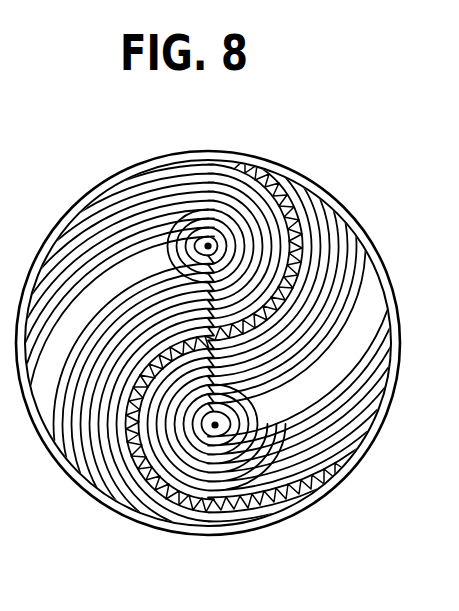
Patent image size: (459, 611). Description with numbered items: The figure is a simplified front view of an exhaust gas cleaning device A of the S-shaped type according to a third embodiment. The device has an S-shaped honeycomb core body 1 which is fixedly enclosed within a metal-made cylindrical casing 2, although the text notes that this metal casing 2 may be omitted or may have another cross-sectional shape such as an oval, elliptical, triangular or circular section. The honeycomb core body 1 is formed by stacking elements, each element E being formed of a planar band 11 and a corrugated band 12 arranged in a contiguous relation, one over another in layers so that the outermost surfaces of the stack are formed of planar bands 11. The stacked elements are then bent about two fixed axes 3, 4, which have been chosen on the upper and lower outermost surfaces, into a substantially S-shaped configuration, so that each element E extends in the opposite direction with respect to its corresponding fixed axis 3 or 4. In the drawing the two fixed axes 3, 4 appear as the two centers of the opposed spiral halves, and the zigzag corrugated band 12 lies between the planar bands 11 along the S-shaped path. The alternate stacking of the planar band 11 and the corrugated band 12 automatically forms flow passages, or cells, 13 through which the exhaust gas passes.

The spiral wound element assembly A is at (356, 194).
The honeycomb core body 1 is at (355, 300).
The metal casing 2 is at (378, 245).
The fixed axis 3 is at (210, 244).
The fixed axis 4 is at (218, 427).
The element E is at (239, 381).
The planar band 11 is at (214, 517).
The corrugated band 12 is at (233, 510).
The flow passages (cells) 13 is at (263, 515).